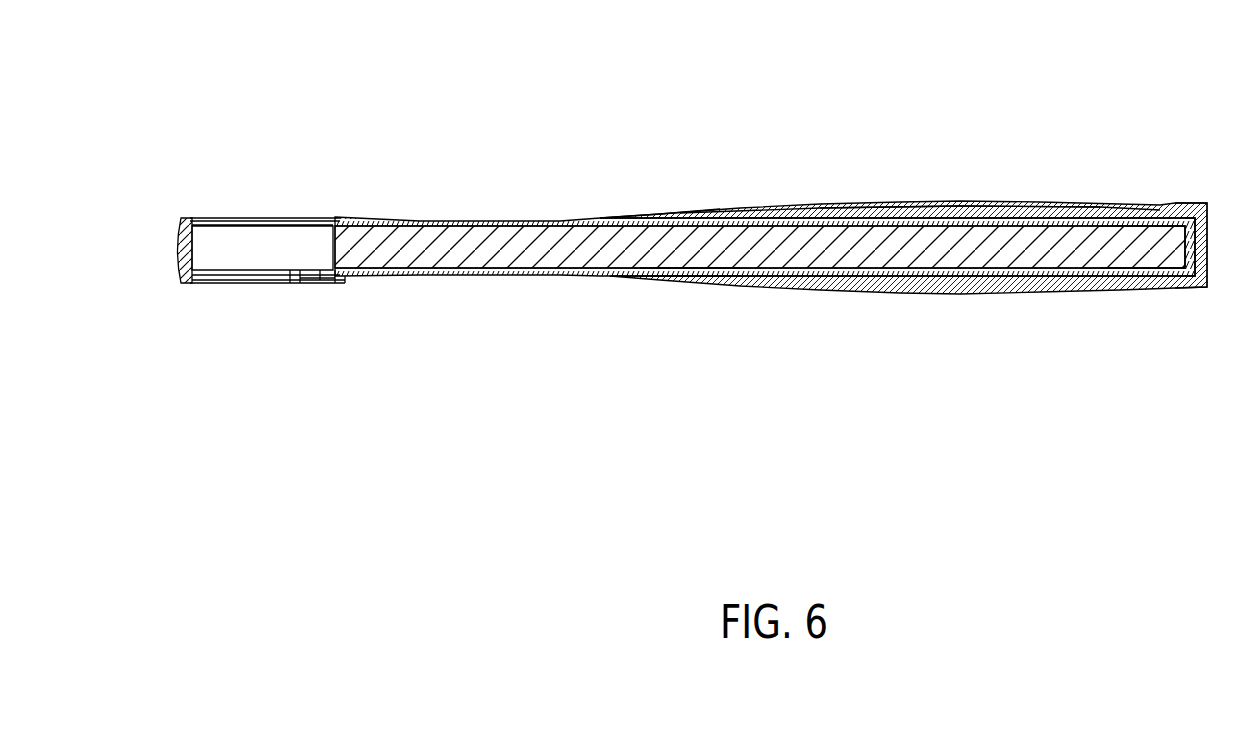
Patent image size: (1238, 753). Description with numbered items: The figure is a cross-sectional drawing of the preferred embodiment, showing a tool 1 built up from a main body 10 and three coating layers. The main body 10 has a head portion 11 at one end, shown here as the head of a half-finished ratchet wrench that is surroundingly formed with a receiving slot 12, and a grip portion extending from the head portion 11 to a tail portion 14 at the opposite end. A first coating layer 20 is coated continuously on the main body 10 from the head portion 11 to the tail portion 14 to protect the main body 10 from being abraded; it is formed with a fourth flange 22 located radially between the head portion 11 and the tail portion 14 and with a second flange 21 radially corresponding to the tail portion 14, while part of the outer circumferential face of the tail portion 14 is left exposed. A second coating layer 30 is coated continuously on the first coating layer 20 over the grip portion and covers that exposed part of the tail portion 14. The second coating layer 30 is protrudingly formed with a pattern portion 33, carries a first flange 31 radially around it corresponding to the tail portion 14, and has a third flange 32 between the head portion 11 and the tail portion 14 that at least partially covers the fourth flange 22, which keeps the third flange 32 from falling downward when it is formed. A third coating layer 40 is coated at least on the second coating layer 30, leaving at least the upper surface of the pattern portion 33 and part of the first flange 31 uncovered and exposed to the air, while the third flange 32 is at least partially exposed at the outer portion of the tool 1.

The tool 1 is at (714, 97).
The main body 10 is at (607, 236).
The head portion 11 is at (272, 204).
The receiving slot 12 is at (207, 218).
The tail portion 14 is at (1148, 236).
The first coating layer 20 is at (643, 221).
The second flange 21 is at (1194, 275).
The fourth flange 22 is at (693, 279).
The second coating layer 30 is at (800, 289).
The first flange 31 is at (1181, 212).
The third flange 32 is at (710, 214).
The pattern portion 33 is at (884, 205).
The third coating layer 40 is at (987, 206).